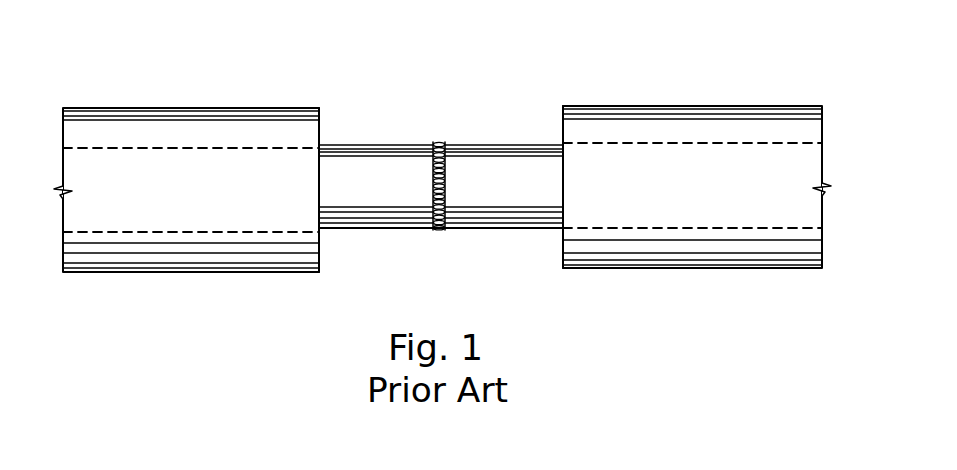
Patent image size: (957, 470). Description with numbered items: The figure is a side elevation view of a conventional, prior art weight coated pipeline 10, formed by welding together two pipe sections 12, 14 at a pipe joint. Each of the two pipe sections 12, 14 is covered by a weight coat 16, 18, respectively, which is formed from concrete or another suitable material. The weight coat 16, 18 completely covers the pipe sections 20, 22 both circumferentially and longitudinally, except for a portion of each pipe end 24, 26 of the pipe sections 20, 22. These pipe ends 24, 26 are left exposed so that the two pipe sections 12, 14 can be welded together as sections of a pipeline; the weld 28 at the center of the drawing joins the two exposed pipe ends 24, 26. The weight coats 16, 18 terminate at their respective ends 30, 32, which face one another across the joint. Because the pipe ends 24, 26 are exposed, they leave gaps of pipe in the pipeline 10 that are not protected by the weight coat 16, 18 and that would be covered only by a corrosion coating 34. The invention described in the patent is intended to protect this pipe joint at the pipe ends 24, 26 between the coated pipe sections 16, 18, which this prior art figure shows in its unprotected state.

The weight coated pipeline 10 is at (374, 58).
The pipe section 12 is at (290, 78).
The pipe section 14 is at (610, 65).
The weight coat 16 is at (244, 133).
The weight coat 18 is at (707, 128).
The pipe section 20 is at (190, 167).
The pipe section 22 is at (768, 160).
The pipe end 24 is at (362, 170).
The pipe end 26 is at (508, 167).
The weld 28 is at (440, 232).
The first casing end 30 is at (320, 108).
The second casing end 32 is at (563, 107).
The corrosion coating 34 is at (405, 233).